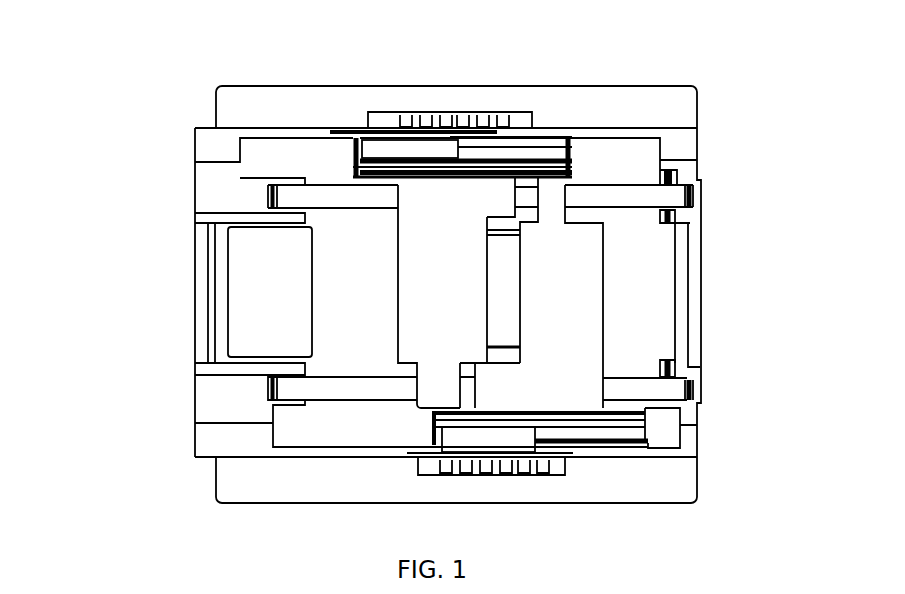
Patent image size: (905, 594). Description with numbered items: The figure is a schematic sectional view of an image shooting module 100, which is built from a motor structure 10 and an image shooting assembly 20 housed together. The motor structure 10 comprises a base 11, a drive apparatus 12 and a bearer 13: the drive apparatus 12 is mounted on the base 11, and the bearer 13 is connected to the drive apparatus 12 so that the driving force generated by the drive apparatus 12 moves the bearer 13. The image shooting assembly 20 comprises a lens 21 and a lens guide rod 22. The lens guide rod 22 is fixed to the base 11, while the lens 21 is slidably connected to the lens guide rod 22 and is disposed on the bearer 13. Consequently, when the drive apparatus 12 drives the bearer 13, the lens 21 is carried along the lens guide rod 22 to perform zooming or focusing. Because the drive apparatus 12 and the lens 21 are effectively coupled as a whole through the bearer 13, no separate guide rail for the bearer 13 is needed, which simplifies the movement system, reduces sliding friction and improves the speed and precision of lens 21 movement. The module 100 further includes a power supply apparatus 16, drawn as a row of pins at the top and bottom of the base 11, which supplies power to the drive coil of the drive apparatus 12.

The image shooting module 100 is at (142, 102).
The motor structure 10 is at (197, 320).
The base 11 is at (196, 172).
The drive apparatus 12 is at (445, 140).
The bearer 13 is at (520, 230).
The power supply apparatus 16 is at (382, 112).
The image shooting assembly 20 is at (606, 296).
The lens 21 is at (592, 268).
The lens guide rod 22 is at (657, 200).